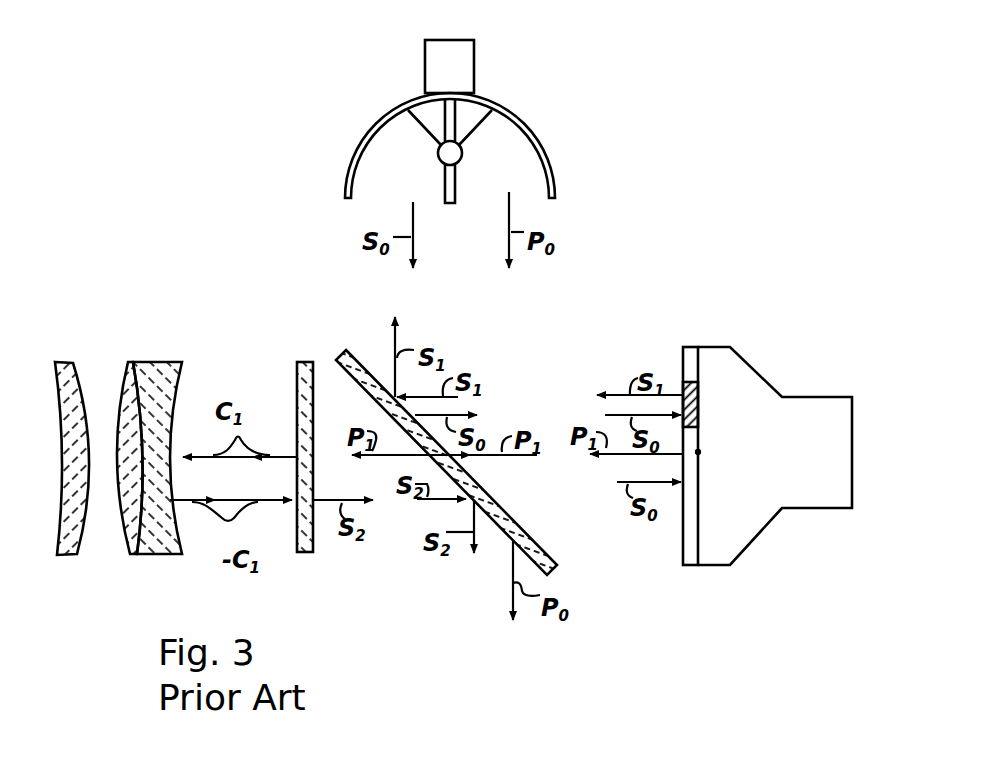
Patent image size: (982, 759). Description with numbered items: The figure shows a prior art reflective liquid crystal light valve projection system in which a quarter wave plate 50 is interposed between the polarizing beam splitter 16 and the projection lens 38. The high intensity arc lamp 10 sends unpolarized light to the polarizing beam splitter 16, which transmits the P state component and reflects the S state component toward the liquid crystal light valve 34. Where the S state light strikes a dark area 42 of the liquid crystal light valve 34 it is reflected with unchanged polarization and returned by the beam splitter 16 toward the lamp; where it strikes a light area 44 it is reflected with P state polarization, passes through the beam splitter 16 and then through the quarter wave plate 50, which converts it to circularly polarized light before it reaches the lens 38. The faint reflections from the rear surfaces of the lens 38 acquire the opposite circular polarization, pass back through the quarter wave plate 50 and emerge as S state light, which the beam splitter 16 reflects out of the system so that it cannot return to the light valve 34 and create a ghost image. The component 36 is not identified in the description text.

The high intensity arc lamp 10 is at (540, 122).
The polarizing beam splitter 16 is at (354, 326).
The liquid crystal light valve 34 is at (688, 345).
The detector 36 is at (760, 368).
The lens 38 is at (103, 348).
The dark area 42 is at (699, 404).
The light area 44 is at (699, 452).
The quarter wave plate 50 is at (297, 365).